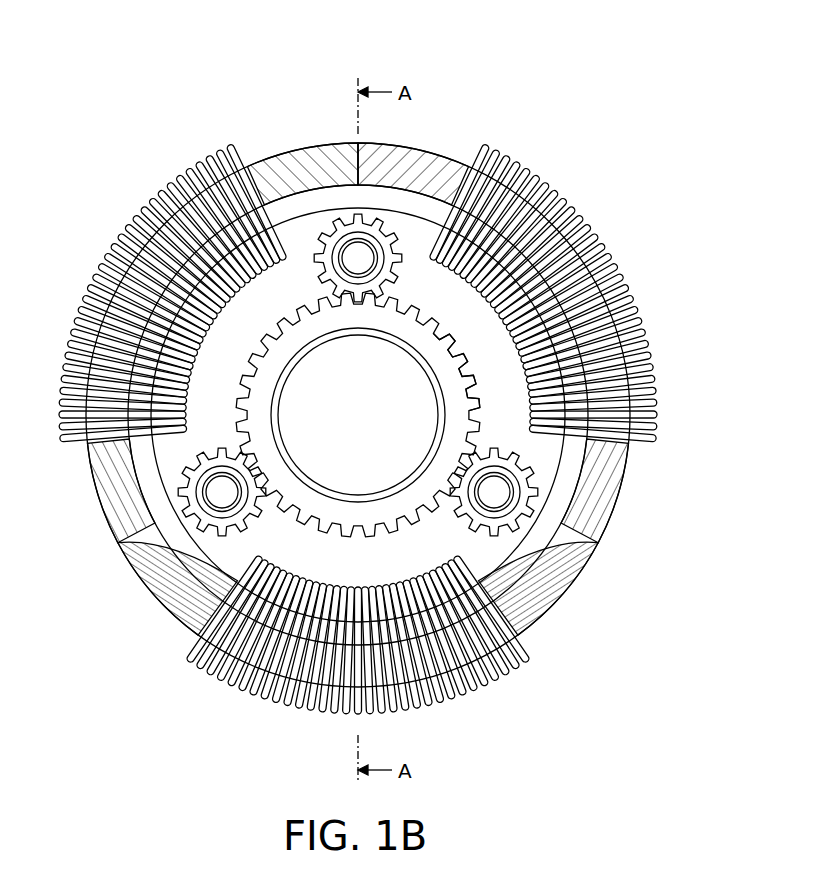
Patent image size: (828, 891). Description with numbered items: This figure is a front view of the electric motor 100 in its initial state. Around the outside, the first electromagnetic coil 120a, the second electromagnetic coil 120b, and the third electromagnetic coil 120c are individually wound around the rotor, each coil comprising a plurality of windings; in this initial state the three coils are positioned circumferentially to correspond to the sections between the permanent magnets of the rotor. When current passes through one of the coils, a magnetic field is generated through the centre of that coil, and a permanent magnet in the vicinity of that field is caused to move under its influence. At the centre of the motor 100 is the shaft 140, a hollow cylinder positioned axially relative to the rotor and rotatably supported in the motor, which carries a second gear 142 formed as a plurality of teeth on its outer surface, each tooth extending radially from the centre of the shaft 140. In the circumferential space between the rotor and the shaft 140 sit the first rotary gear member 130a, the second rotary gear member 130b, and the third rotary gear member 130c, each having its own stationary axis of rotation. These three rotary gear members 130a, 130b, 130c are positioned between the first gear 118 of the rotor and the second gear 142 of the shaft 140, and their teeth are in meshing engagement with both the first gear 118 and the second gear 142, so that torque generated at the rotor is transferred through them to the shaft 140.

The electric motor 100 is at (210, 92).
The first gear 118 is at (190, 560).
The first electromagnetic coil 120a is at (515, 162).
The second electromagnetic coil 120b is at (492, 675).
The third electromagnetic coil 120c is at (188, 200).
The first rotary gear member 130a is at (358, 224).
The second rotary gear member 130b is at (525, 498).
The third rotary gear member 130c is at (200, 505).
The shaft 140 is at (457, 427).
The second gear 142 is at (420, 303).